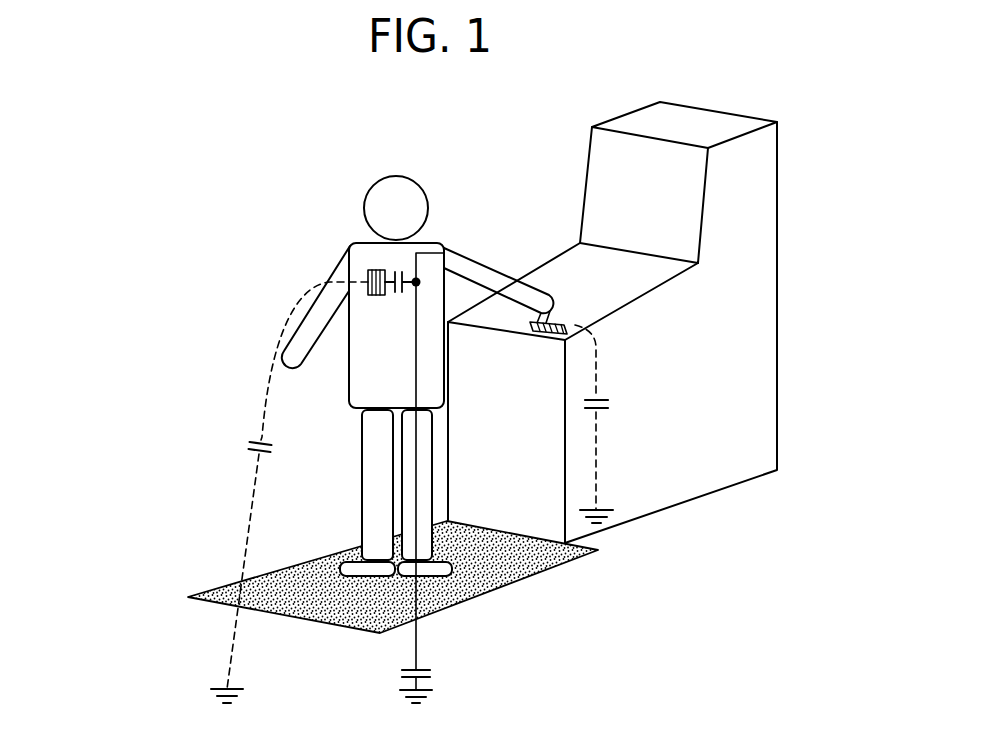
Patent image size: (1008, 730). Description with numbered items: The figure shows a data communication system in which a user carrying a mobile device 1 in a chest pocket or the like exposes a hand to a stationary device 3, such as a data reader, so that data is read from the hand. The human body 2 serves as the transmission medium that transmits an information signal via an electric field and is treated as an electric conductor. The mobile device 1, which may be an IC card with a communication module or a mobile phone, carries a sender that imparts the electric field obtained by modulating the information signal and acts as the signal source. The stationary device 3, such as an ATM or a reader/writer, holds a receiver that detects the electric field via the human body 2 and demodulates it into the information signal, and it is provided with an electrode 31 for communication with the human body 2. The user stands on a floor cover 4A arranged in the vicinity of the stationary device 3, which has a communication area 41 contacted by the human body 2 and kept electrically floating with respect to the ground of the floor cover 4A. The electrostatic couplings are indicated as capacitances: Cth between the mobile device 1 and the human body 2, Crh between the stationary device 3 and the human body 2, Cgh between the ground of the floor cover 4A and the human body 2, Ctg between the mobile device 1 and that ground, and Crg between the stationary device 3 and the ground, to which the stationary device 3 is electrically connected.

The mobile device 1 is at (367, 297).
The human body 2 is at (412, 188).
The stationary device 3 is at (770, 270).
The electrode for a communication 31 is at (577, 326).
The floor cover 4A is at (167, 605).
The communication area 41 is at (573, 556).
The electrostatic capacitance between the mobile device and the human body Cth is at (392, 260).
The electrostatic capacitance between the stationary device and the human body Crh is at (567, 295).
The electrostatic capacitance between the mobile device and the ground Ctg is at (232, 443).
The electrostatic capacitance between the stationary device and the ground Crg is at (615, 400).
The electrostatic capacitance between the ground and the human body Cgh is at (447, 672).